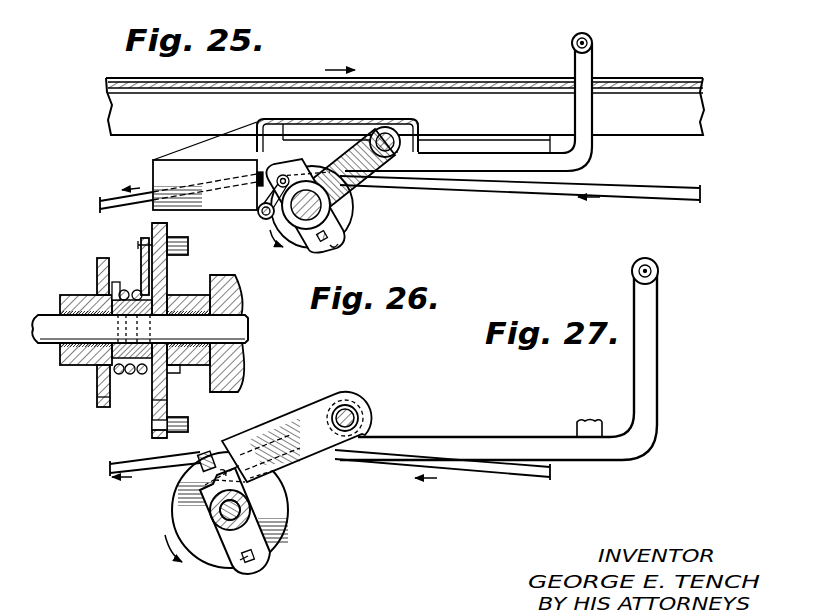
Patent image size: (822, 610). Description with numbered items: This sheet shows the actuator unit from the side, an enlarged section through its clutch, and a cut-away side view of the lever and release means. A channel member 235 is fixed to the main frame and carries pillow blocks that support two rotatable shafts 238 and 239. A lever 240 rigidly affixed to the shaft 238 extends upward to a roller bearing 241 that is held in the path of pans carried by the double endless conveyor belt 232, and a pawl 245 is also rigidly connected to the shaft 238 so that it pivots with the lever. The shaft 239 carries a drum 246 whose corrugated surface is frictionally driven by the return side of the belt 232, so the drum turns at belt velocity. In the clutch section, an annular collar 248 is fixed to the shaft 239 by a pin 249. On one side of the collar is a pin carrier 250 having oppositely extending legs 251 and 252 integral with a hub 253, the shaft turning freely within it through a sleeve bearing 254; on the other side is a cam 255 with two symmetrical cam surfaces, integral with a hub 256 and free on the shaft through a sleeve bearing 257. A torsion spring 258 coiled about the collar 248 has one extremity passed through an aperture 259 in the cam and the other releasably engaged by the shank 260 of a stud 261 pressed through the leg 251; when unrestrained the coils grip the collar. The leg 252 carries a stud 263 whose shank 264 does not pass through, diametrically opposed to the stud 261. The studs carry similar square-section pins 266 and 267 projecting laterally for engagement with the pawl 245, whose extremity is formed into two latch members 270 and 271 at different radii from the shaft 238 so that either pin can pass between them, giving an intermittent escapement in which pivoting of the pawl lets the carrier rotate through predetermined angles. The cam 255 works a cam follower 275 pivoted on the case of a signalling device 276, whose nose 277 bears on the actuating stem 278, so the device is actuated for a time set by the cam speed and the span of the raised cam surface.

In FIG. 25, the double endless conveyor belt 232 is at (676, 80).
In FIG. 27, the double endless conveyor belt 232 is at (490, 478).
In FIG. 25, the channel member 235 is at (345, 120).
In FIG. 25, the shaft 238 is at (420, 128).
In FIG. 27, the shaft 238 is at (362, 419).
In FIG. 26, the shaft 239 is at (248, 332).
In FIG. 27, the shaft 239 is at (174, 522).
In FIG. 25, the lever 240 is at (592, 157).
In FIG. 27, the lever 240 is at (480, 436).
In FIG. 25, the roller bearing 241 is at (593, 45).
In FIG. 27, the roller bearing 241 is at (658, 268).
In FIG. 25, the pawl 245 is at (348, 148).
In FIG. 27, the pawl 245 is at (303, 416).
In FIG. 25, the drum 246 is at (312, 207).
In FIG. 26, the drum 246 is at (236, 282).
In FIG. 27, the drum 246 is at (289, 525).
In FIG. 26, the annular collar 248 is at (140, 375).
In FIG. 26, the pin 249 is at (112, 295).
In FIG. 25, the pin carrier 250 is at (346, 215).
In FIG. 26, the pin carrier 250 is at (167, 297).
In FIG. 27, the pin carrier 250 is at (272, 508).
In FIG. 26, the leg 251 is at (167, 273).
In FIG. 27, the leg 251 is at (200, 492).
In FIG. 25, the leg 252 is at (333, 252).
In FIG. 26, the leg 252 is at (169, 403).
In FIG. 27, the leg 252 is at (256, 557).
In FIG. 26, the hub 253 is at (168, 373).
In FIG. 26, the sleeve bearing 254 is at (238, 353).
In FIG. 25, the cam 255 is at (346, 188).
In FIG. 26, the cam 255 is at (100, 389).
In FIG. 26, the hub 256 is at (77, 363).
In FIG. 26, the sleeve bearing 257 is at (60, 303).
In FIG. 26, the torsion spring 258 is at (141, 268).
In FIG. 26, the aperture 259 is at (100, 268).
In FIG. 26, the shank 260 is at (144, 244).
In FIG. 26, the stud 261 is at (167, 225).
In FIG. 26, the stud 263 is at (163, 433).
In FIG. 26, the shank 264 is at (152, 424).
In FIG. 26, the pin 266 is at (188, 249).
In FIG. 27, the pin 266 is at (218, 460).
In FIG. 25, the pin 267 is at (332, 236).
In FIG. 26, the pin 267 is at (189, 423).
In FIG. 27, the pin 267 is at (240, 560).
In FIG. 27, the latch member 270 is at (200, 465).
In FIG. 27, the latch member 271 is at (286, 458).
In FIG. 25, the cam follower 275 is at (263, 215).
In FIG. 25, the signalling device 276 is at (153, 170).
In FIG. 25, the nose 277 is at (263, 168).
In FIG. 25, the actuating stem 278 is at (257, 178).